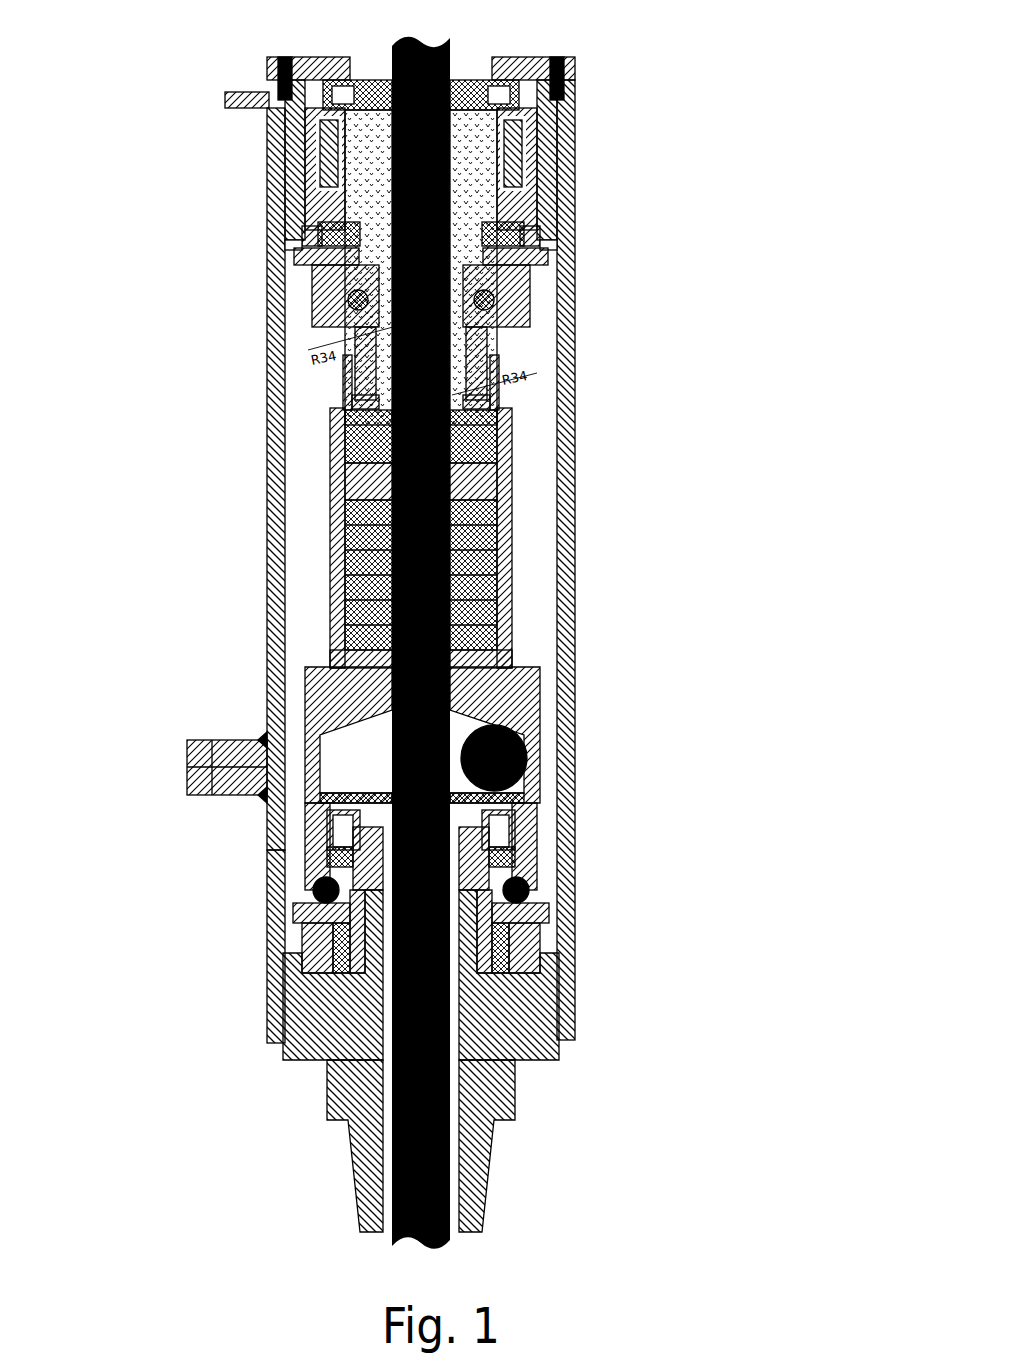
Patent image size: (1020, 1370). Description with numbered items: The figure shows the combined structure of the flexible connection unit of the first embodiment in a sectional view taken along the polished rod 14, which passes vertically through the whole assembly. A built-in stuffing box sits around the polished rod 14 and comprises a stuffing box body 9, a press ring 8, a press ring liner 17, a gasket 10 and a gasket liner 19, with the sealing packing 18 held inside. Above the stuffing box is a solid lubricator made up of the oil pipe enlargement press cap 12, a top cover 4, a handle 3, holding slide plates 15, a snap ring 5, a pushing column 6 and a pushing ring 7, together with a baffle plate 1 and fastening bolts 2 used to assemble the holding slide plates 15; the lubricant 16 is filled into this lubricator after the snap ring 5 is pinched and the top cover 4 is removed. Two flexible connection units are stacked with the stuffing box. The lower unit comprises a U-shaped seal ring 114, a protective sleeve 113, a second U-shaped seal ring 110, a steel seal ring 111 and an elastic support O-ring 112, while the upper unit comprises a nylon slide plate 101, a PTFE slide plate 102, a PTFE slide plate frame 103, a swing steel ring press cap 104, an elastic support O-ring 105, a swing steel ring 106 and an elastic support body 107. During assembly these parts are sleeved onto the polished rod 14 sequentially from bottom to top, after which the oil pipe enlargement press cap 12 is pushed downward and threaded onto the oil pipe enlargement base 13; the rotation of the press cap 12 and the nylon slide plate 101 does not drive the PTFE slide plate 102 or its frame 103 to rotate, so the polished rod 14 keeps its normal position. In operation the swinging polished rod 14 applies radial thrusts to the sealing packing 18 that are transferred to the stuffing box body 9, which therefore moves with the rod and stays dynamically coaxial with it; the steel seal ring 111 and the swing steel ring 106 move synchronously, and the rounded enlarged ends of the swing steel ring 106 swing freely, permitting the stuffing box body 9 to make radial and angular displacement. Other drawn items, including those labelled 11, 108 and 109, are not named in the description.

The baffle plate 1 is at (265, 64).
The fastening bolts 2 is at (272, 84).
The handle 3 is at (246, 108).
The top cover 4 is at (268, 150).
The snap ring 5 is at (284, 152).
The pushing column 6 is at (322, 186).
The pushing ring 7 is at (338, 206).
The press ring 8 is at (346, 375).
The stuffing box body 9 is at (330, 537).
The gasket 10 is at (352, 655).
The side connector 11 is at (222, 740).
The oil pipe enlargement press cap 12 is at (283, 950).
The oil pipe enlargement base 13 is at (300, 1054).
The polished rod 14 is at (385, 1190).
The holding slide plates 15 is at (558, 56).
The lubricant 16 is at (575, 120).
The press ring liner 17 is at (472, 471).
The sealing packing 18 is at (497, 566).
The gasket liner 19 is at (477, 646).
The nylon slide plate 101 is at (548, 228).
The PTFE slide plate 102 is at (552, 236).
The PTFE slide plate frame 103 is at (560, 250).
The swing steel ring press cap 104 is at (545, 283).
The elastic support O-ring 105 is at (533, 316).
The swing steel ring 106 is at (488, 346).
The elastic support body 107 is at (497, 426).
The ball valve 108 is at (526, 726).
The valve seat ring 109 is at (524, 797).
The U-shaped seal ring 110 is at (502, 832).
The steel seal ring 111 is at (492, 876).
The elastic support O-ring 112 is at (545, 871).
The protective sleeve 113 is at (545, 906).
The U-shaped seal ring 114 is at (550, 936).